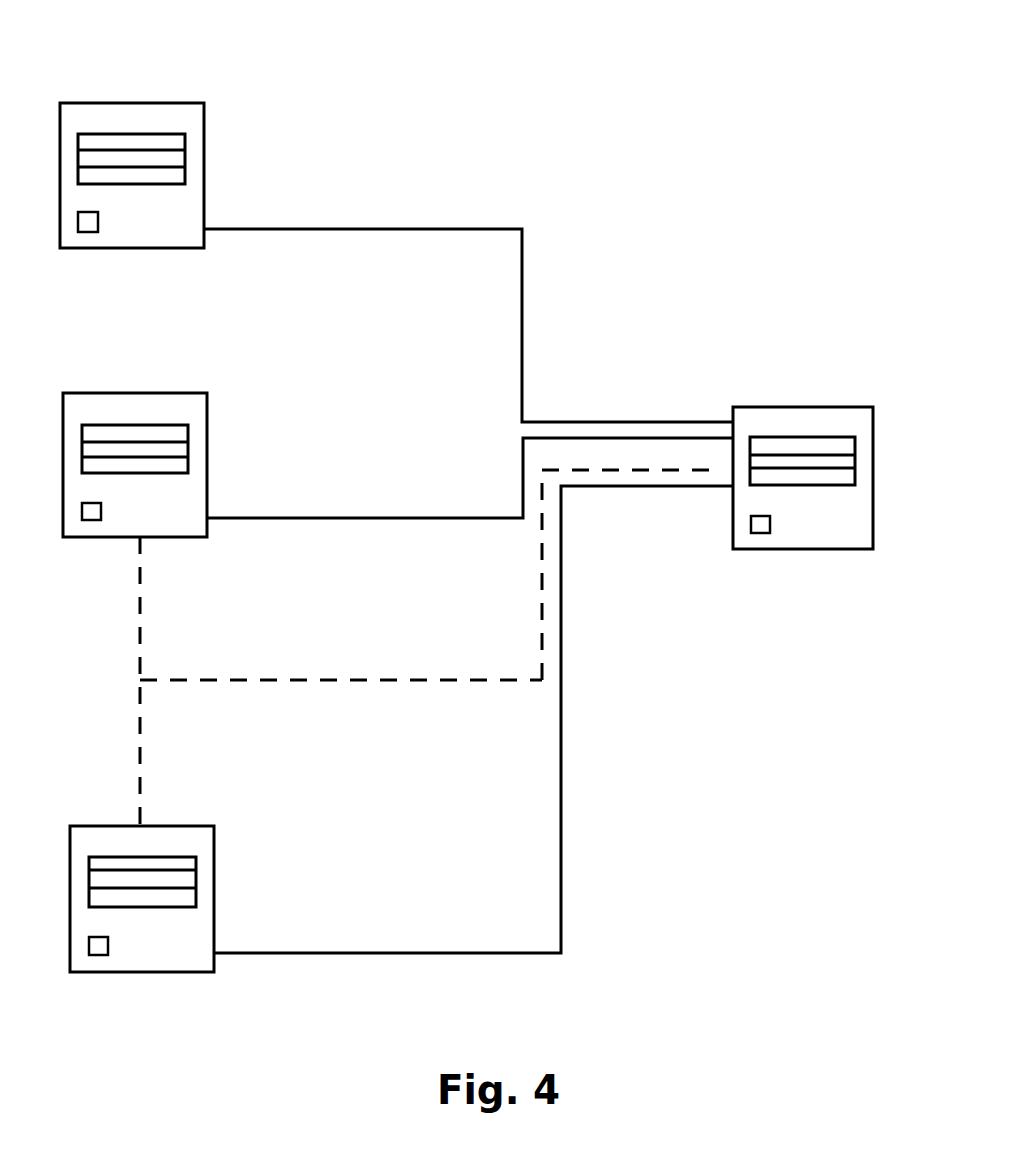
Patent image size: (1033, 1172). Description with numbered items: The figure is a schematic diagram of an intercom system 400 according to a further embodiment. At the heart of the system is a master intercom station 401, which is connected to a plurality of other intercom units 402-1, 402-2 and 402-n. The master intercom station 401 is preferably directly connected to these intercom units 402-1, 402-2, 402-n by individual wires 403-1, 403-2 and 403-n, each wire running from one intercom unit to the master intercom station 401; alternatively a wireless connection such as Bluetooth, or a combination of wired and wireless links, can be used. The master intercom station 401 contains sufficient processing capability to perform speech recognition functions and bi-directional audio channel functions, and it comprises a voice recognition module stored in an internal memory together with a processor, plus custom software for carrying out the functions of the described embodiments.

The intercom system 400 is at (466, 490).
The master intercom station 401 is at (778, 407).
The intercom unit 402-1 is at (204, 137).
The intercom unit 402-2 is at (207, 428).
The intercom unit 402-n is at (214, 852).
The wire 403-1 is at (380, 229).
The wire 403-2 is at (353, 518).
The wire 403-n is at (377, 953).